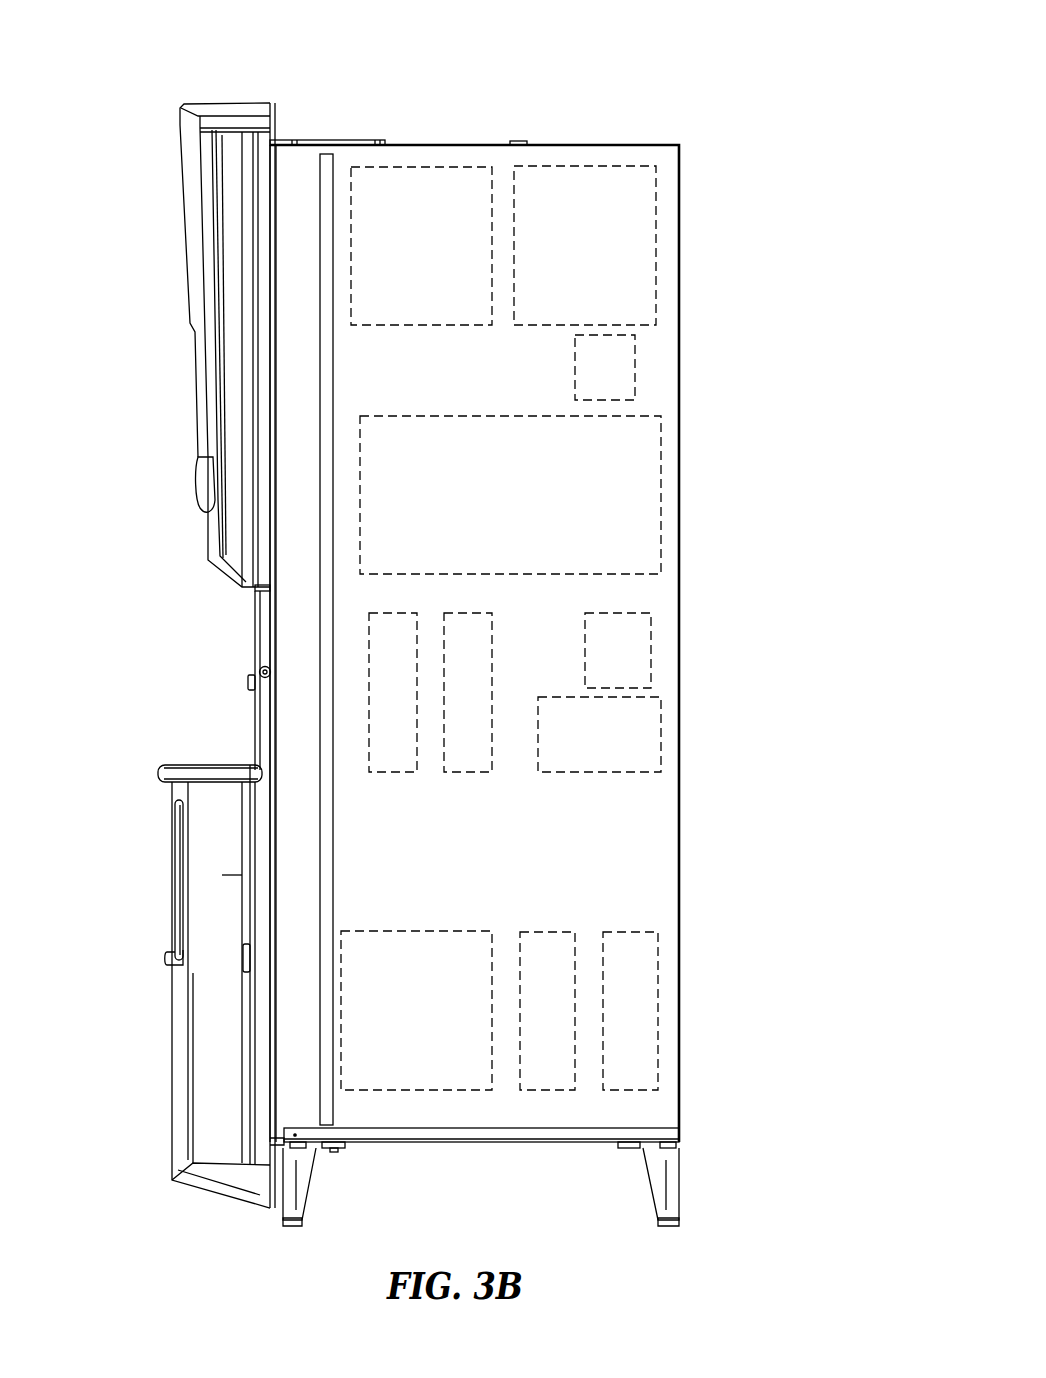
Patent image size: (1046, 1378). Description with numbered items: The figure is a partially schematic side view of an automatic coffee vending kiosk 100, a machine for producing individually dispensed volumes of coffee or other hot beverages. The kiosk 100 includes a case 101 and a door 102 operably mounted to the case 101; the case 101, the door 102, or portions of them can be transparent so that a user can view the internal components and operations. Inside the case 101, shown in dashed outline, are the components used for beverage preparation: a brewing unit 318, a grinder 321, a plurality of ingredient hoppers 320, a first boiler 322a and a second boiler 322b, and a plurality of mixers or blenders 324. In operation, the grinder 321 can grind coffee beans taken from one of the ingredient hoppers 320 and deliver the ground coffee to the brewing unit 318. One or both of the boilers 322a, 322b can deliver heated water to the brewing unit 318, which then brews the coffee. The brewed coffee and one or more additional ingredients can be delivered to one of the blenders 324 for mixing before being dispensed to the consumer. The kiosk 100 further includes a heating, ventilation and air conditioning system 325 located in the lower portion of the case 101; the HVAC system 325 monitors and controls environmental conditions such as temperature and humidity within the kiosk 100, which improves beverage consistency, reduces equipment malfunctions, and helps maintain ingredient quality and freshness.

The automatic coffee vending kiosk 100 is at (717, 116).
The case 101 is at (680, 175).
The door 102 is at (233, 108).
The brewing unit 318 is at (665, 485).
The ingredient hoppers 320 is at (428, 162).
The grinder 321 is at (640, 370).
The first boiler 322a is at (550, 928).
The second boiler 322b is at (662, 985).
The mixers or blenders 324 is at (388, 773).
The HVAC system 325 is at (447, 1092).